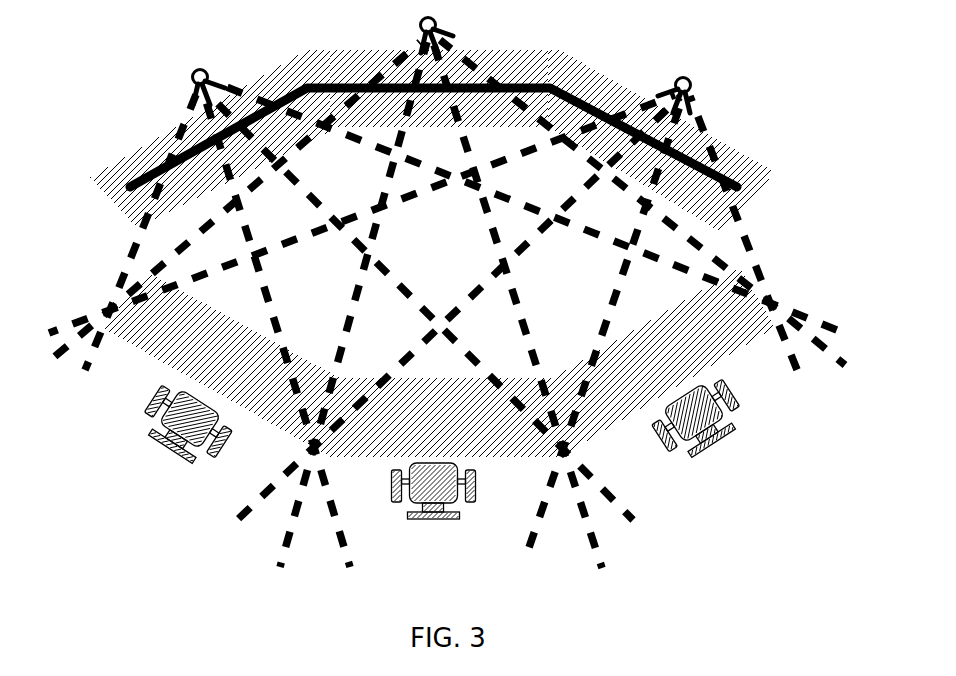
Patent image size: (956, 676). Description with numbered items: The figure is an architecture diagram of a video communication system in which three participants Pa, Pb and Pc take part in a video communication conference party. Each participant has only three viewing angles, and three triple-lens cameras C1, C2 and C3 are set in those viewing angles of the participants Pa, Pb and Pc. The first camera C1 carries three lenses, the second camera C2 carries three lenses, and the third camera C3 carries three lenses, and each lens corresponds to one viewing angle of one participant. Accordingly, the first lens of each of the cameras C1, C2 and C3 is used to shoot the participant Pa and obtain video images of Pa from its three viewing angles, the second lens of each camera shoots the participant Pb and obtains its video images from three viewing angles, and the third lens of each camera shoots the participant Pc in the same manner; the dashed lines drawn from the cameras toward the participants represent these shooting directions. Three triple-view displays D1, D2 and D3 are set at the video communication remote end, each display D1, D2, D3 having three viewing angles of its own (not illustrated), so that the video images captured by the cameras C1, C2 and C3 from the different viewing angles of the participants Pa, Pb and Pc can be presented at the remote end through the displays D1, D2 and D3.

The triple-lens camera C1 is at (192, 76).
The triple-lens camera C2 is at (445, 26).
The triple-lens camera C3 is at (705, 81).
The triple-view display D1 is at (210, 138).
The triple-view display D2 is at (439, 88).
The triple-view display D3 is at (659, 140).
The participant Pa is at (185, 429).
The participant Pb is at (434, 508).
The participant Pc is at (698, 422).